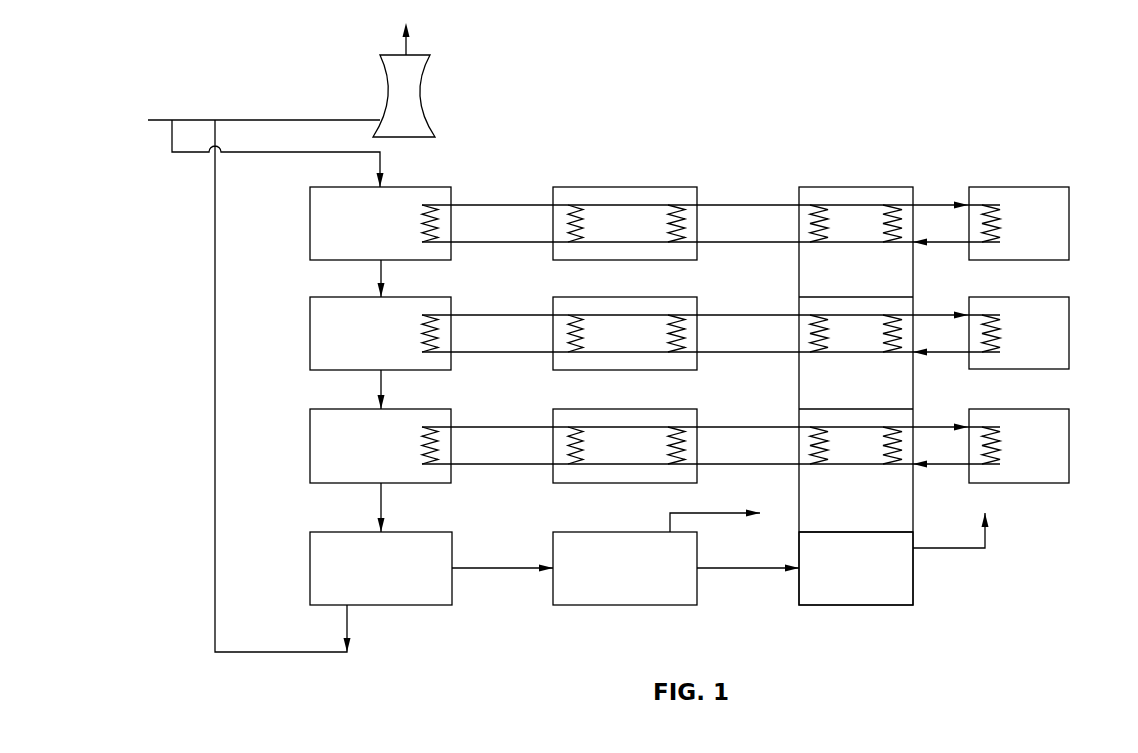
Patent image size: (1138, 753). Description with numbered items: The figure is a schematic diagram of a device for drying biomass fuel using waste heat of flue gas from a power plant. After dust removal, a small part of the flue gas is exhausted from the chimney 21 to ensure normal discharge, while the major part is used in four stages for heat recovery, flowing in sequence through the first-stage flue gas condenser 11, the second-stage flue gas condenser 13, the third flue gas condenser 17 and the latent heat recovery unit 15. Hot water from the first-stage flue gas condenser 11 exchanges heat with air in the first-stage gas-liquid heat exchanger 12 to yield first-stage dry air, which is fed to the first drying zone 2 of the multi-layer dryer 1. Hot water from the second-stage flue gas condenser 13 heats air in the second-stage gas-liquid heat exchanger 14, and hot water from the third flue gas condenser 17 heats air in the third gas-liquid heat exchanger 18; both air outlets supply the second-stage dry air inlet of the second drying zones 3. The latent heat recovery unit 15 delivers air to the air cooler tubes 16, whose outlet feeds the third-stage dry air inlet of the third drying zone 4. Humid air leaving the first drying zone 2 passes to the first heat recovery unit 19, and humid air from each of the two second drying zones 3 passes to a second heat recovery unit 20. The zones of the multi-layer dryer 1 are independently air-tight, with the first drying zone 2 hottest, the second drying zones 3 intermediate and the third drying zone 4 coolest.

The multi-layer dryer 1 is at (799, 187).
The first drying zone 2 is at (853, 197).
The second drying zone 3 is at (811, 372).
The third drying zone 4 is at (818, 593).
The first-stage flue gas condenser 11 is at (332, 233).
The first-stage gas-liquid heat exchanger 12 is at (627, 205).
The second-stage flue gas condenser 13 is at (330, 345).
The second-stage gas-liquid heat exchanger 14 is at (580, 309).
The latent heat recovery unit 15 is at (327, 577).
The air cooler tubes 16 is at (570, 540).
The third flue gas condenser 17 is at (330, 458).
The third gas-liquid heat exchanger 18 is at (580, 416).
The first heat recovery unit 19 is at (1028, 200).
The second heat recovery unit 20 is at (1062, 315).
The chimney 21 is at (417, 120).